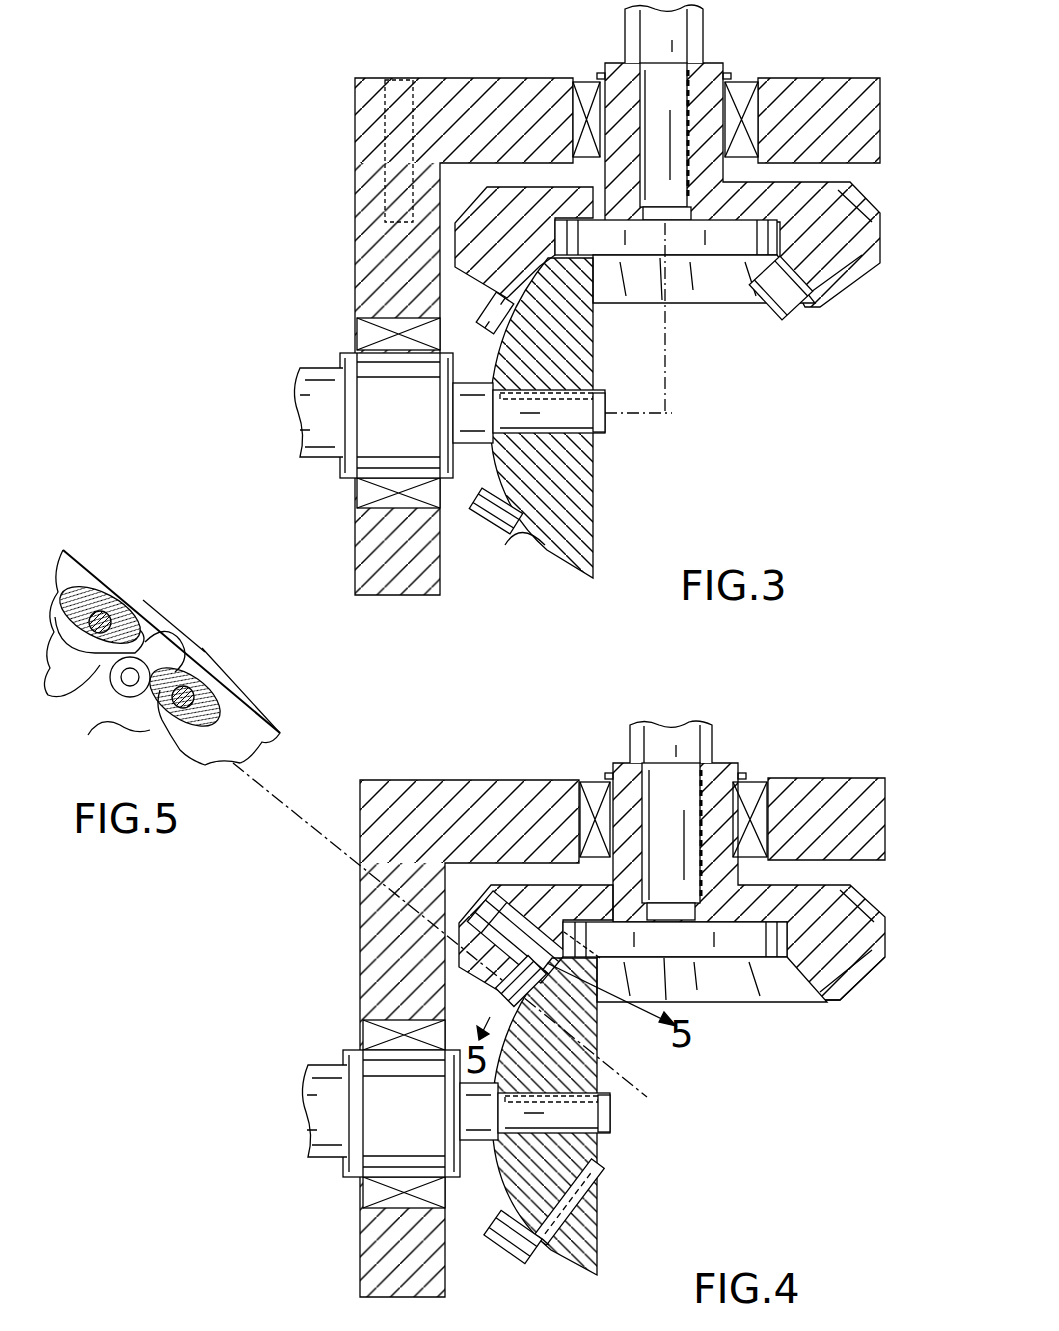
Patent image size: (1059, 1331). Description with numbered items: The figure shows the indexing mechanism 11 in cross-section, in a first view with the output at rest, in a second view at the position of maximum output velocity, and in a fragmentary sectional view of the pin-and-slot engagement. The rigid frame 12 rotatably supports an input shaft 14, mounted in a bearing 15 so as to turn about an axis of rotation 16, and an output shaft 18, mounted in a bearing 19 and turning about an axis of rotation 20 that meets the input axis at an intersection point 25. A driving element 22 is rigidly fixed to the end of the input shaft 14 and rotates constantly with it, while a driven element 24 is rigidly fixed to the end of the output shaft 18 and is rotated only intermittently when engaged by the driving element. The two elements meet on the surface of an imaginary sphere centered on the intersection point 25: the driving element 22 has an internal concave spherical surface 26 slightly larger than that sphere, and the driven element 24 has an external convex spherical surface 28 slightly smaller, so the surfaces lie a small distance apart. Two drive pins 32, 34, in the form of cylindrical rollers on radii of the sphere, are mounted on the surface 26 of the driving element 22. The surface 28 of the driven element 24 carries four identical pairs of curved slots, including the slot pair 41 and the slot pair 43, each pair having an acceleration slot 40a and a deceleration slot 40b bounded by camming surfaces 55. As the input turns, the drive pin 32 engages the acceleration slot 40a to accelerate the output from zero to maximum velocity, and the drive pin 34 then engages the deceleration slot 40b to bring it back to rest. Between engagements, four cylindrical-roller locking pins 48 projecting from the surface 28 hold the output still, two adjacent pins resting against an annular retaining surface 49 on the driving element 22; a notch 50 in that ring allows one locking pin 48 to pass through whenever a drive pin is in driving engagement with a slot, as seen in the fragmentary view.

In FIG. 3, the indexing mechanism 11 is at (256, 164).
In FIG. 4, the indexing mechanism 11 is at (207, 1027).
In FIG. 3, the rigid frame 12 is at (365, 188).
In FIG. 4, the rigid frame 12 is at (622, 1014).
In FIG. 3, the input shaft 14 is at (704, 30).
In FIG. 4, the input shaft 14 is at (702, 820).
In FIG. 3, the bearing 15 is at (735, 96).
In FIG. 4, the bearing 15 is at (706, 794).
In FIG. 3, the axis of rotation 16 is at (668, 352).
In FIG. 3, the output shaft 18 is at (312, 431).
In FIG. 4, the output shaft 18 is at (428, 1111).
In FIG. 3, the bearing 19 is at (368, 493).
In FIG. 4, the bearing 19 is at (383, 1150).
In FIG. 3, the axis of rotation 20 is at (630, 414).
In FIG. 3, the driving element 22 is at (836, 308).
In FIG. 4, the driving element 22 is at (745, 909).
In FIG. 5, the driving element 22 is at (170, 625).
In FIG. 3, the driven element 24 is at (571, 582).
In FIG. 4, the driven element 24 is at (576, 1116).
In FIG. 5, the driven element 24 is at (282, 718).
In FIG. 3, the intersection point 25 is at (678, 424).
In FIG. 3, the internal concave spherical surface 26 is at (688, 298).
In FIG. 4, the internal concave spherical surface 26 is at (695, 984).
In FIG. 5, the internal concave spherical surface 26 is at (205, 758).
In FIG. 3, the external convex spherical surface 28 is at (540, 545).
In FIG. 4, the external convex spherical surface 28 is at (504, 1217).
In FIG. 5, the external convex spherical surface 28 is at (128, 728).
In FIG. 4, the drive pin 32 is at (618, 1029).
In FIG. 5, the drive pin 32 is at (130, 580).
In FIG. 3, the drive pin 34 is at (776, 320).
In FIG. 5, the drive pin 34 is at (245, 680).
In FIG. 5, the acceleration slot 40a is at (95, 690).
In FIG. 5, the deceleration slot 40b is at (175, 745).
In FIG. 4, the slot pair 41 is at (625, 957).
In FIG. 5, the slot pair 41 is at (200, 640).
In FIG. 4, the slot pair 43 is at (592, 1213).
In FIG. 3, the locking pin 48 is at (479, 318).
In FIG. 4, the locking pin 48 is at (504, 1131).
In FIG. 5, the locking pin 48 is at (120, 722).
In FIG. 3, the annular retaining surface 49 is at (485, 292).
In FIG. 4, the annular retaining surface 49 is at (844, 1030).
In FIG. 4, the notch 50 is at (536, 934).
In FIG. 5, the notch 50 is at (160, 605).
In FIG. 5, the camming surfaces 55 is at (110, 678).